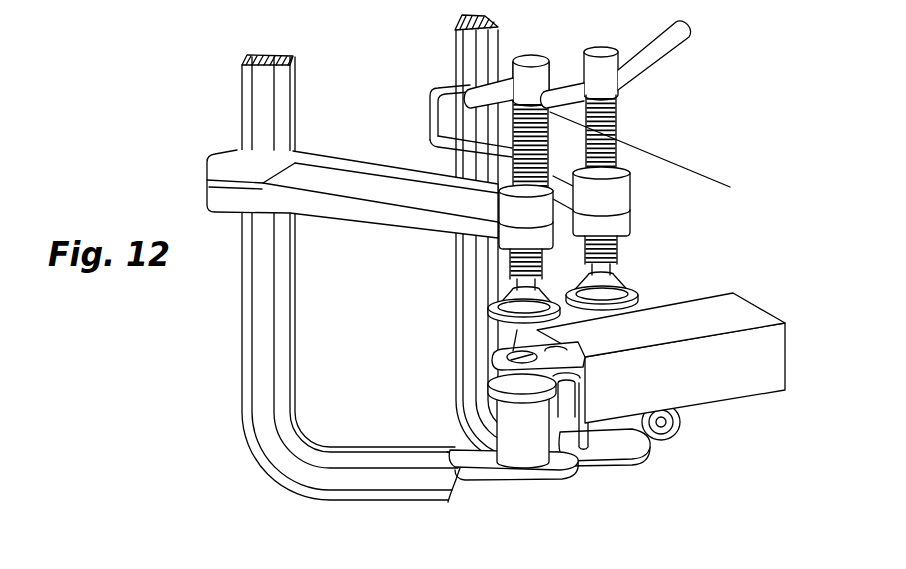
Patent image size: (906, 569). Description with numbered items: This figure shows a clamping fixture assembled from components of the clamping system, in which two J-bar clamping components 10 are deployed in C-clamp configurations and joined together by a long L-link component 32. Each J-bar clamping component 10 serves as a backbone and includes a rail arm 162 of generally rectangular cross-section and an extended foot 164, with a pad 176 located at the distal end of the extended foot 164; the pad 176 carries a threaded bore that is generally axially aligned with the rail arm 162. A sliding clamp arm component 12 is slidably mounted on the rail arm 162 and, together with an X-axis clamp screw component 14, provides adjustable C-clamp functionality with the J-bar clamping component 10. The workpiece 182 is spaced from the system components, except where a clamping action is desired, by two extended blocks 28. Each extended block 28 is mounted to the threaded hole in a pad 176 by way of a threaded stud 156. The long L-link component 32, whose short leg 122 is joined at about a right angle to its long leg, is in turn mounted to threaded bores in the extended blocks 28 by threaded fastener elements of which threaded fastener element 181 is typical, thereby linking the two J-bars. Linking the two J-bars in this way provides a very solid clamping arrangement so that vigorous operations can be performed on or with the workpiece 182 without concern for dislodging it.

The J-bar clamping component 10 is at (363, 281).
The sliding clamp arm component 12 is at (424, 164).
The X-axis clamp screw component 14 is at (628, 115).
The extended block 28 is at (494, 417).
The long L-link component 32 is at (492, 368).
The short leg 122 is at (673, 428).
The threaded stud 156 is at (520, 480).
The rail arm 162 is at (267, 115).
The extended foot 164 is at (423, 486).
The pad 176 is at (597, 466).
The threaded fastener element 181 is at (590, 324).
The workpiece 182 is at (661, 356).